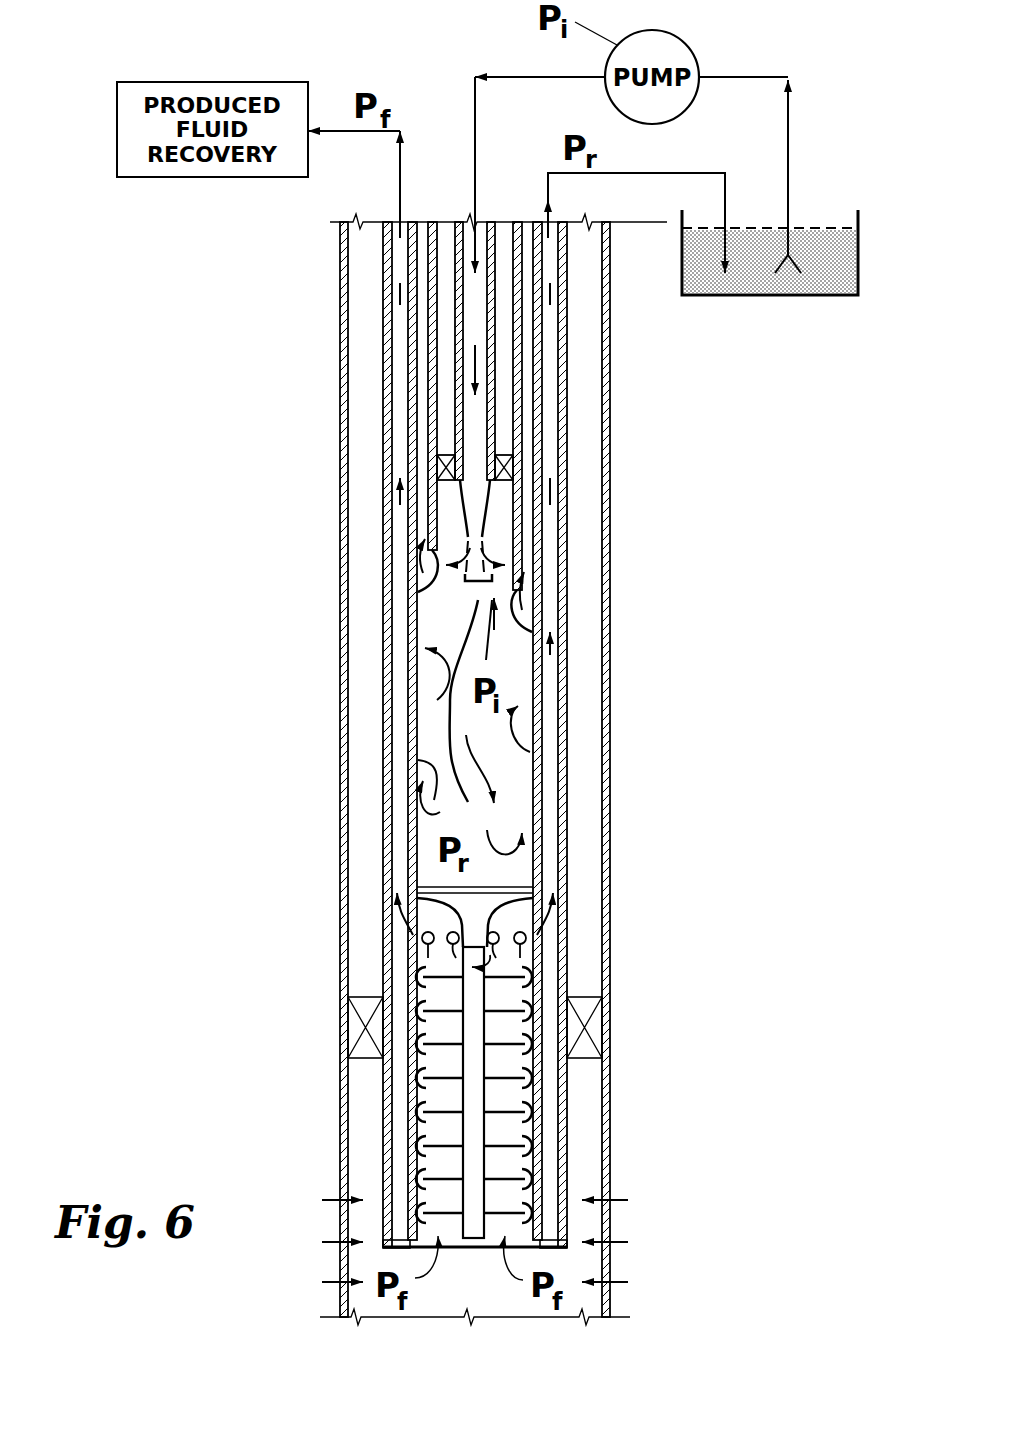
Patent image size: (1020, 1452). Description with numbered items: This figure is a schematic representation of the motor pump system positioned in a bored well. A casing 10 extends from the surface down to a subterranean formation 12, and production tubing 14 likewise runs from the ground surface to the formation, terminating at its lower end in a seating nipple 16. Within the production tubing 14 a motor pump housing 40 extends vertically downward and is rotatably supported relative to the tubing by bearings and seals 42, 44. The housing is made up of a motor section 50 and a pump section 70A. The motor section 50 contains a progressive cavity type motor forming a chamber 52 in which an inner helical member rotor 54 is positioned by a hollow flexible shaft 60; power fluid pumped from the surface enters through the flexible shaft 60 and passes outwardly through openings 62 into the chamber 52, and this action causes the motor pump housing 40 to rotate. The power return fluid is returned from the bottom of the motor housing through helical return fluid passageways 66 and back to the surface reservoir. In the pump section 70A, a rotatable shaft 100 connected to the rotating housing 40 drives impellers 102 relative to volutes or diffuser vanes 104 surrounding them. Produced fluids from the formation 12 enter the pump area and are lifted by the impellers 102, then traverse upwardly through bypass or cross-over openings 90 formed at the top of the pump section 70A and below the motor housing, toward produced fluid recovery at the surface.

The casing 10 is at (611, 421).
The subterranean formation 12 is at (296, 1246).
The production tubing 14 is at (567, 556).
The seating nipple 16 is at (592, 1026).
The motor pump housing 40 is at (543, 778).
The bearings and seals 42 is at (350, 454).
The bearings and seals 44 is at (437, 462).
The motor section 50 is at (549, 632).
The chamber 52 is at (440, 612).
The inner helical member rotor 54 is at (447, 732).
The hollow flexible shaft 60 is at (432, 520).
The openings 62 is at (495, 538).
The helical return fluid passageways 66 is at (527, 738).
The pump section 70A is at (401, 1105).
The bypass or cross-over openings 90 is at (408, 962).
The rotatable shaft 100 is at (473, 1008).
The impellers 102 is at (507, 1110).
The volutes or diffuser vanes 104 is at (414, 1052).